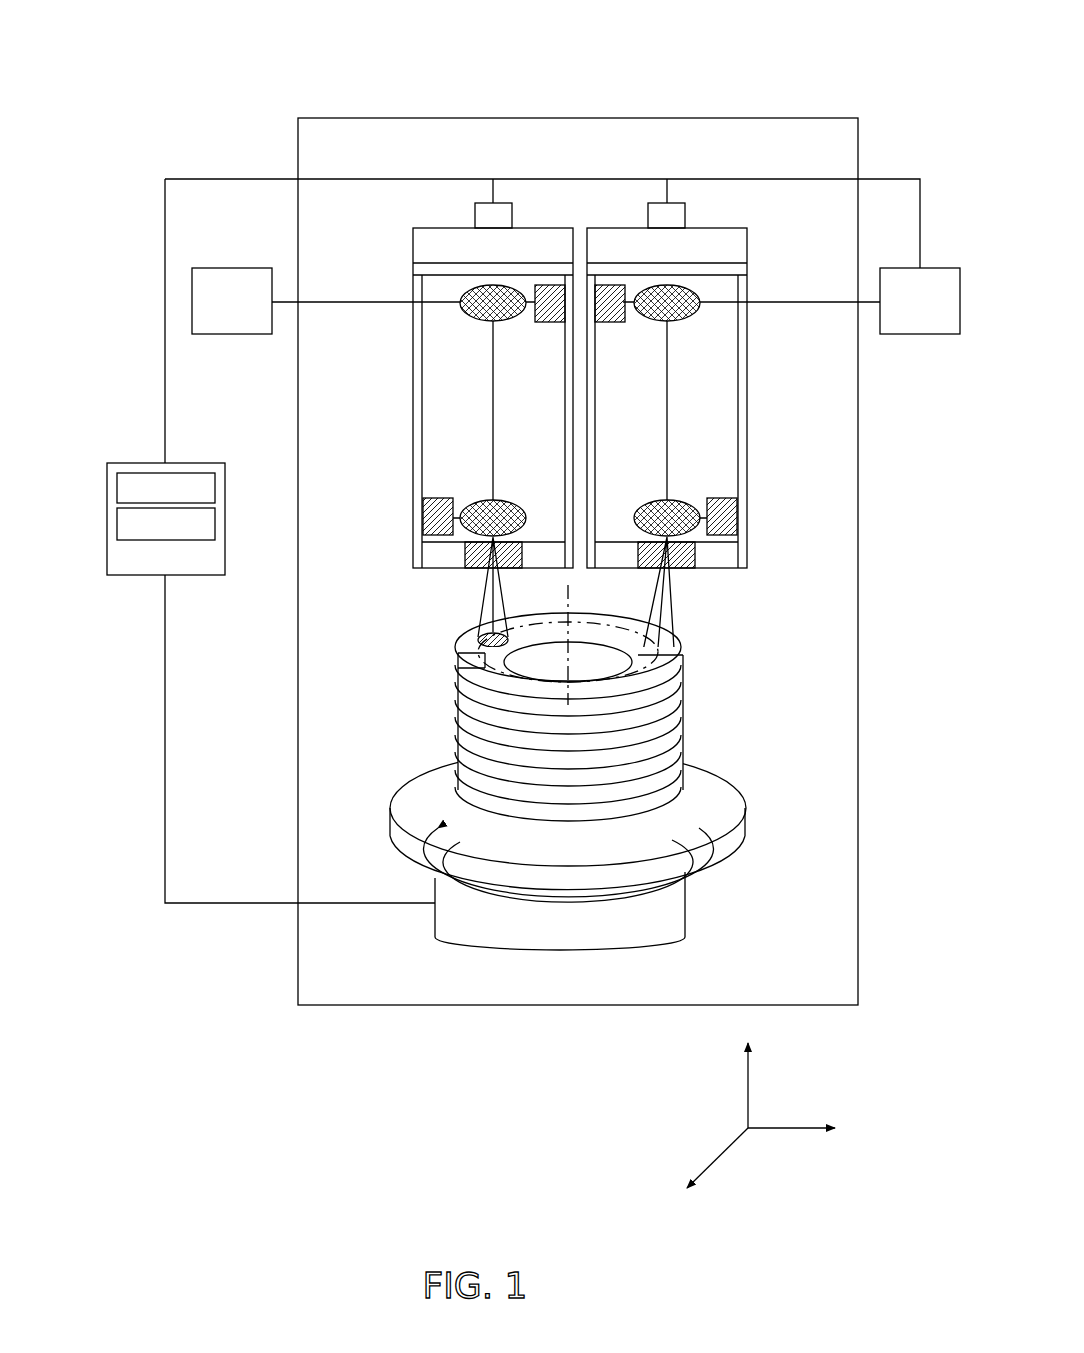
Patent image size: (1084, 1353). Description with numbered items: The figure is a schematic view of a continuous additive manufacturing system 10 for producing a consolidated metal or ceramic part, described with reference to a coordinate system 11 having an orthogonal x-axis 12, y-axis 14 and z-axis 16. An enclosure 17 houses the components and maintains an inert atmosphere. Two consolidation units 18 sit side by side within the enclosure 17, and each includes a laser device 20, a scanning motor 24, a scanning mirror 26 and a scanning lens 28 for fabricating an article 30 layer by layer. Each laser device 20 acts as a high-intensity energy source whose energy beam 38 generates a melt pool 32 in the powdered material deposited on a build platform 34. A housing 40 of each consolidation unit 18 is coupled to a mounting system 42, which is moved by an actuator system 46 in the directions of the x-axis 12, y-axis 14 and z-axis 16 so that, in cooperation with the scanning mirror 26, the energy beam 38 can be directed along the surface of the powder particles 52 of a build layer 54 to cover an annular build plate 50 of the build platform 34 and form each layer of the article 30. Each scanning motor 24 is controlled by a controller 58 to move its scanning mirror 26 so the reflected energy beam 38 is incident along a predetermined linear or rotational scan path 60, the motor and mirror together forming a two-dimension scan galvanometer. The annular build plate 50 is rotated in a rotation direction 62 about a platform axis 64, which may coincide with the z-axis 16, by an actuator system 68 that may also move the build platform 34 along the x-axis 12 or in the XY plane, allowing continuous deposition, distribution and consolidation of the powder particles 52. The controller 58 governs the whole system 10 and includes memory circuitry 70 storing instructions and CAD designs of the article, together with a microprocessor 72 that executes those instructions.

The continuous additive manufacturing system 10 is at (835, 38).
The coordinate system 11 is at (778, 1119).
The x-axis 12 is at (718, 1148).
The y-axis 14 is at (790, 1130).
The z-axis 16 is at (750, 1080).
The enclosure 17 is at (298, 140).
The consolidation unit 18 is at (393, 448).
The laser device 20 is at (238, 268).
The scanning motor 24 is at (550, 287).
The scanning mirror 26 is at (488, 288).
The scanning lens 28 is at (490, 565).
The article 30 is at (578, 695).
The melt pool 32 is at (500, 634).
The build platform 34 is at (572, 845).
The energy beam 38 is at (493, 430).
The housing 40 is at (413, 395).
The mounting system 42 is at (413, 240).
The actuator system 46 is at (495, 195).
The annular build plate 50 is at (705, 775).
The powder particles 52 is at (470, 638).
The build layer 54 is at (458, 668).
The controller 58 is at (107, 568).
The scan path 60 is at (458, 653).
The rotation direction 62 is at (460, 860).
The platform axis 64 is at (575, 595).
The actuator system 68 is at (630, 938).
The memory circuitry 70 is at (117, 530).
The microprocessor 72 is at (117, 490).